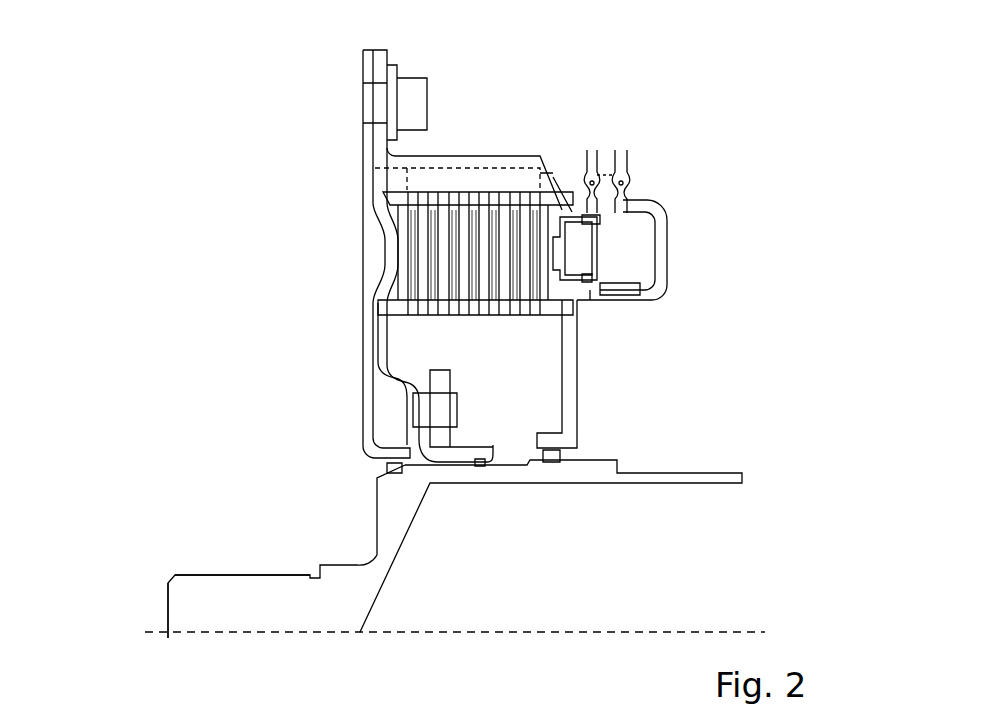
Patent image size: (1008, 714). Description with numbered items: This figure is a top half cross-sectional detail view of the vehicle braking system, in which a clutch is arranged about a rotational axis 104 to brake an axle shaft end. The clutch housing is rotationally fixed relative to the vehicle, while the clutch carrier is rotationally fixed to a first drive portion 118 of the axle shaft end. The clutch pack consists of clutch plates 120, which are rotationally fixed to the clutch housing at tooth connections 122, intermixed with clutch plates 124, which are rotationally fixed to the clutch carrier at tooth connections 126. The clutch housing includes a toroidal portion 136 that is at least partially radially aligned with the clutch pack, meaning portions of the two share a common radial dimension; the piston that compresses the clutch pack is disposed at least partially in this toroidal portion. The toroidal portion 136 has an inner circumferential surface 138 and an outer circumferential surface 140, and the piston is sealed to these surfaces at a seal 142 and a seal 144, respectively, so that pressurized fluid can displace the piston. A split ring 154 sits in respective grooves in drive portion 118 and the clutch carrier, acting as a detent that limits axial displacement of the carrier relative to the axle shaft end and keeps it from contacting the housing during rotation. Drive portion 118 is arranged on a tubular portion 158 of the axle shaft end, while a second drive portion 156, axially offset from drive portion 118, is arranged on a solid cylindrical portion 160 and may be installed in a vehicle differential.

The rotational axis 104 is at (323, 632).
The drive portion 118 is at (455, 549).
The tubular portion 158 is at (453, 473).
The clutch plates 120 is at (530, 292).
The tooth connections 122 is at (402, 198).
The clutch plates 124 is at (417, 223).
The tooth connections 126 is at (537, 312).
The toroidal portion 136 is at (682, 243).
The inner circumferential surface 138 is at (613, 278).
The outer circumferential surface 140 is at (588, 232).
The seal 142 is at (587, 277).
The seal 144 is at (590, 240).
The split ring 154 is at (483, 465).
The drive portion 156 is at (166, 571).
The solid cylindrical portion 160 is at (243, 590).